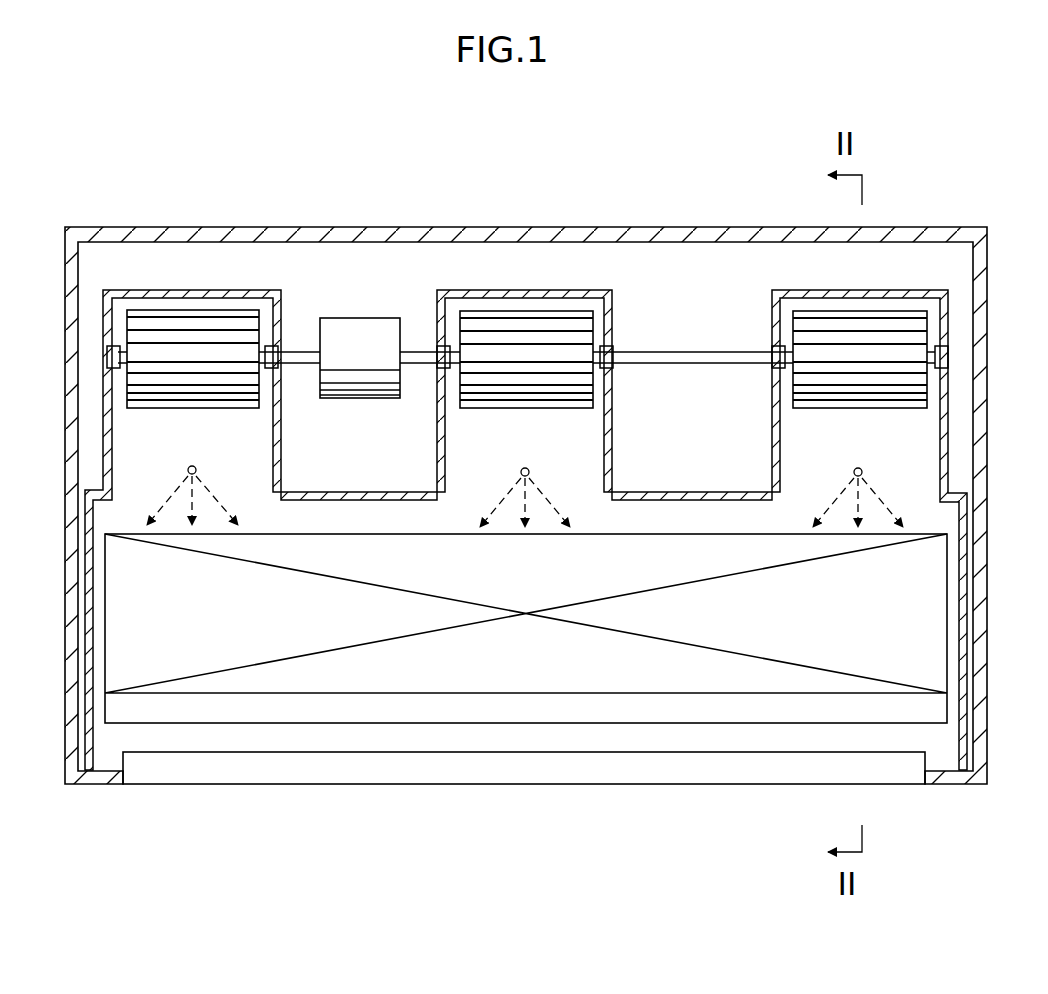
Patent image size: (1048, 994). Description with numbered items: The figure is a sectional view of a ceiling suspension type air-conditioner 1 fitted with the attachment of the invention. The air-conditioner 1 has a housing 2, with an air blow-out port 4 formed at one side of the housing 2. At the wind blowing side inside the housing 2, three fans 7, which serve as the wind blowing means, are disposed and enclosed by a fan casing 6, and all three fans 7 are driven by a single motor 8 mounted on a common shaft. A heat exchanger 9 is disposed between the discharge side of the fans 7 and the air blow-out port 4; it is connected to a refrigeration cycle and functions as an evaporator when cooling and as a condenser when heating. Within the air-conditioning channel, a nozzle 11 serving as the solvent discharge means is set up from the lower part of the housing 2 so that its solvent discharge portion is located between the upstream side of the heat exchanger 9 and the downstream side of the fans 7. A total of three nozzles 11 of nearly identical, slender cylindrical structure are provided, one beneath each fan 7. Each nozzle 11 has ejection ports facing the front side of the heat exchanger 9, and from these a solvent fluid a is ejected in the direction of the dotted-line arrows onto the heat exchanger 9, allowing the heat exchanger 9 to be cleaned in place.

The ceiling suspension type air-conditioner 1 is at (449, 222).
The housing 2 is at (988, 425).
The air blow-out port 4 is at (348, 778).
The fan casing 6 is at (333, 490).
The fan 7 is at (178, 327).
The motor 8 is at (363, 318).
The heat exchanger 9 is at (486, 670).
The nozzle 11 is at (188, 469).
The solvent fluid a is at (222, 510).